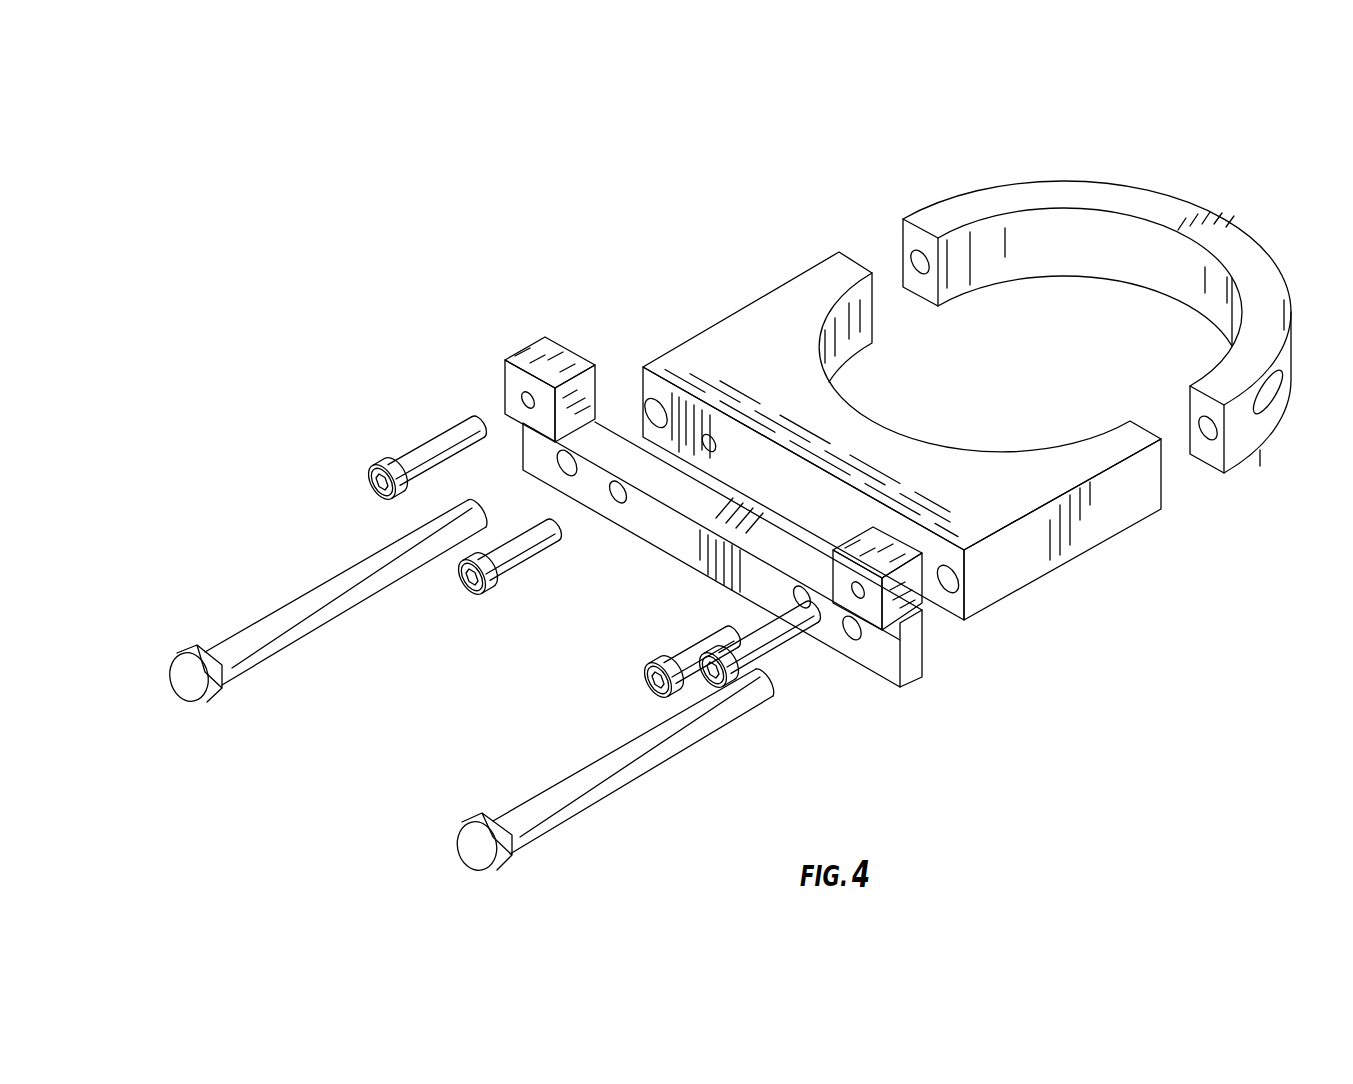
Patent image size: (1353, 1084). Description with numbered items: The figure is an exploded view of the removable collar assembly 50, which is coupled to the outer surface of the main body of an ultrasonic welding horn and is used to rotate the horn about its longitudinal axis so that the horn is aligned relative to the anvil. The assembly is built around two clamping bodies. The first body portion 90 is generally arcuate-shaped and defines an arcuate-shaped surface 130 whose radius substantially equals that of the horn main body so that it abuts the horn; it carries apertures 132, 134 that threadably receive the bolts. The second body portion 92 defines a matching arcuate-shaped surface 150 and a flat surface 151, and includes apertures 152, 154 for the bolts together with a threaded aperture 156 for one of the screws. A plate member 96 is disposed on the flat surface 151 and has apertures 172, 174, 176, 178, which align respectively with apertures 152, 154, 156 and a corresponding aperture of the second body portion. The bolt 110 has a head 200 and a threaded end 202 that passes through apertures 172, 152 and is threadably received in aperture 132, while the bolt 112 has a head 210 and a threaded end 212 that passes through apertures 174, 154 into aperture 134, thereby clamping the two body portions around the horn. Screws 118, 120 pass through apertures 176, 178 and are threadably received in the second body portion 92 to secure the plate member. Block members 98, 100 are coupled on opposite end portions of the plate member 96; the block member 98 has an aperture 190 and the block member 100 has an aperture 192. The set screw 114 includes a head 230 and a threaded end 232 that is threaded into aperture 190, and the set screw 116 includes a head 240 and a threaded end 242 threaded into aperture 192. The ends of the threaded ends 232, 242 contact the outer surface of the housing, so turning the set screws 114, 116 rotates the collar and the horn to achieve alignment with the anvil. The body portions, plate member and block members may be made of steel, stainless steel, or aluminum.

The removable collar assembly 50 is at (912, 152).
The first body portion 90 is at (1156, 200).
The second body portion 92 is at (1055, 552).
The plate member 96 is at (898, 697).
The block member 98 is at (560, 350).
The block member 100 is at (895, 610).
The bolt 110 is at (290, 655).
The bolt 112 is at (560, 828).
The set screw 114 is at (365, 489).
The set screw 116 is at (740, 690).
The screw 118 is at (517, 556).
The screw 120 is at (644, 686).
The arcuate-shaped surface 130 is at (1150, 278).
The aperture 132 is at (920, 265).
The aperture 134 is at (1210, 432).
The arcuate-shaped surface 150 is at (850, 352).
The flat surface 151 is at (796, 483).
The aperture 152 is at (660, 410).
The aperture 154 is at (957, 577).
The aperture 156 is at (714, 448).
The aperture 172 is at (560, 472).
The aperture 174 is at (852, 642).
The aperture 176 is at (618, 505).
The aperture 178 is at (796, 594).
The aperture 190 is at (524, 400).
The aperture 192 is at (830, 556).
The head 200 is at (178, 656).
The threaded end 202 is at (368, 566).
The head 210 is at (478, 820).
The threaded end 212 is at (604, 752).
The head 230 is at (384, 465).
The threaded end 232 is at (430, 455).
The head 240 is at (722, 695).
The threaded end 242 is at (767, 620).